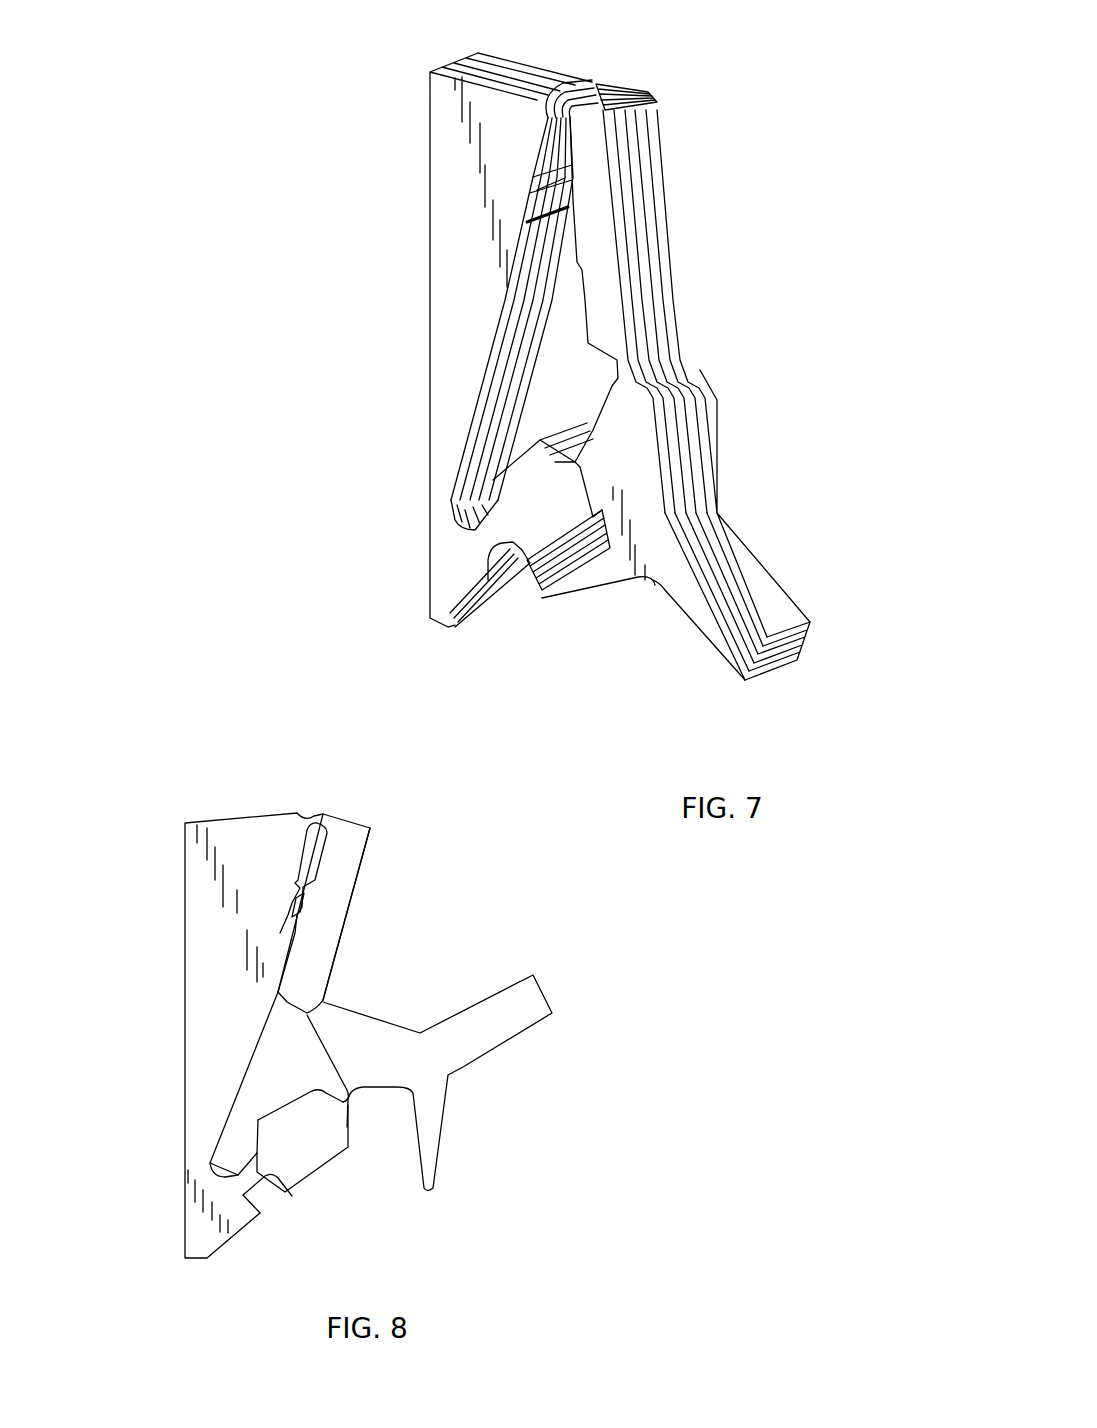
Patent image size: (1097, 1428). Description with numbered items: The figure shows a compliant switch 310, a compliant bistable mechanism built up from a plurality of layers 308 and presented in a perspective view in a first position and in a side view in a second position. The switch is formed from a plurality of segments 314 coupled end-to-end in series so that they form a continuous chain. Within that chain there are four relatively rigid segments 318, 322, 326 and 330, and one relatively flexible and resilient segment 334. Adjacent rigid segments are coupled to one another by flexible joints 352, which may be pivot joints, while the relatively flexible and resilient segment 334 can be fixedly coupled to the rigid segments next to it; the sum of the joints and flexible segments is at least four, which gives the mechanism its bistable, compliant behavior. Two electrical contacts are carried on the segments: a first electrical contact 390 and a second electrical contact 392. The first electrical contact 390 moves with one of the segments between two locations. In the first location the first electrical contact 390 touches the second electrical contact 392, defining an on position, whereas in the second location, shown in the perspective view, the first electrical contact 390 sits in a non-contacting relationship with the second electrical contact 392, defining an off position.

In FIG. 7, the layers 308 is at (673, 268).
In FIG. 7, the compliant switch 310 is at (740, 497).
In FIG. 8, the compliant switch 310 is at (478, 1158).
In FIG. 7, the segments 314 is at (660, 128).
In FIG. 8, the segments 314 is at (340, 950).
In FIG. 7, the relatively rigid segment 318 is at (617, 428).
In FIG. 8, the relatively rigid segment 318 is at (357, 1045).
In FIG. 7, the relatively rigid segment 322 is at (663, 170).
In FIG. 8, the relatively rigid segment 322 is at (353, 890).
In FIG. 7, the relatively rigid segment 326 is at (463, 240).
In FIG. 8, the relatively rigid segment 326 is at (183, 878).
In FIG. 7, the relatively rigid segment 330 is at (537, 497).
In FIG. 8, the relatively rigid segment 330 is at (313, 1173).
In FIG. 7, the relatively flexible and resilient segment 334 is at (503, 548).
In FIG. 8, the relatively flexible and resilient segment 334 is at (250, 1178).
In FIG. 7, the flexible joints 352 is at (592, 80).
In FIG. 7, the first electrical contact 390 is at (577, 212).
In FIG. 8, the first electrical contact 390 is at (300, 908).
In FIG. 7, the second electrical contact 392 is at (572, 195).
In FIG. 8, the second electrical contact 392 is at (282, 905).